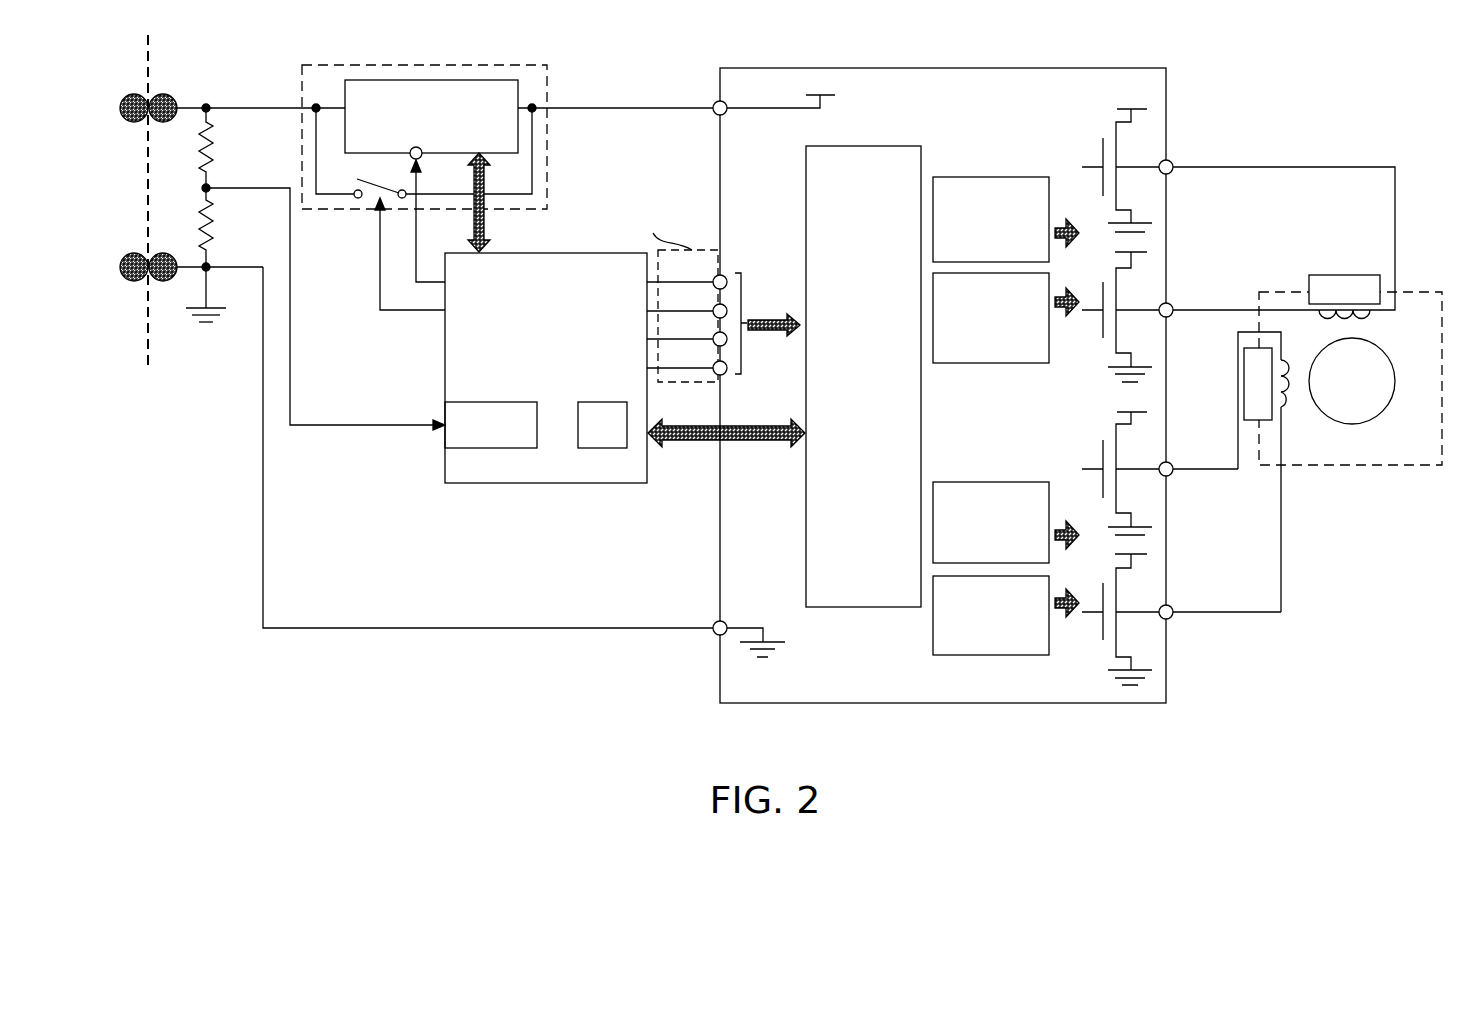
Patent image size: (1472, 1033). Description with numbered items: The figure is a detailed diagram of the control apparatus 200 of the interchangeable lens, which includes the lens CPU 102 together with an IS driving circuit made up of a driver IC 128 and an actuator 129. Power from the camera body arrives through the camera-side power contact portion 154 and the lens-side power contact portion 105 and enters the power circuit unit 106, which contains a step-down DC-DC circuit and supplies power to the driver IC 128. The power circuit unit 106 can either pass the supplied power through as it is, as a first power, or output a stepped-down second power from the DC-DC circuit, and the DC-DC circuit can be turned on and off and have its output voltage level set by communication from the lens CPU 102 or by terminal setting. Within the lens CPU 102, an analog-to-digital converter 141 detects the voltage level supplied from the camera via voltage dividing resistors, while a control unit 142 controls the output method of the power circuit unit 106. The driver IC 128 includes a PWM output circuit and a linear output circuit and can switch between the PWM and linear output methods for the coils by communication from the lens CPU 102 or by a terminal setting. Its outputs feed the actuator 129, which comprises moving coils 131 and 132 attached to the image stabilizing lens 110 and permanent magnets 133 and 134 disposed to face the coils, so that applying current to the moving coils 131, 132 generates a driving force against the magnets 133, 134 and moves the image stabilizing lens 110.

The control apparatus 200 is at (766, 360).
The power contact portion 105 is at (182, 89).
The power contact portion 154 is at (134, 122).
The power circuit unit 106 is at (530, 65).
The lens CPU 102 is at (546, 397).
The analog-to-digital converter 141 is at (478, 448).
The control unit 142 is at (605, 448).
The driver IC 128 is at (720, 672).
The actuator 129 is at (1337, 411).
The moving coil 131 is at (1277, 424).
The moving coil 132 is at (1285, 408).
The magnet 133 is at (1372, 275).
The magnet 134 is at (1255, 420).
The image stabilizing lens 110 is at (1393, 367).